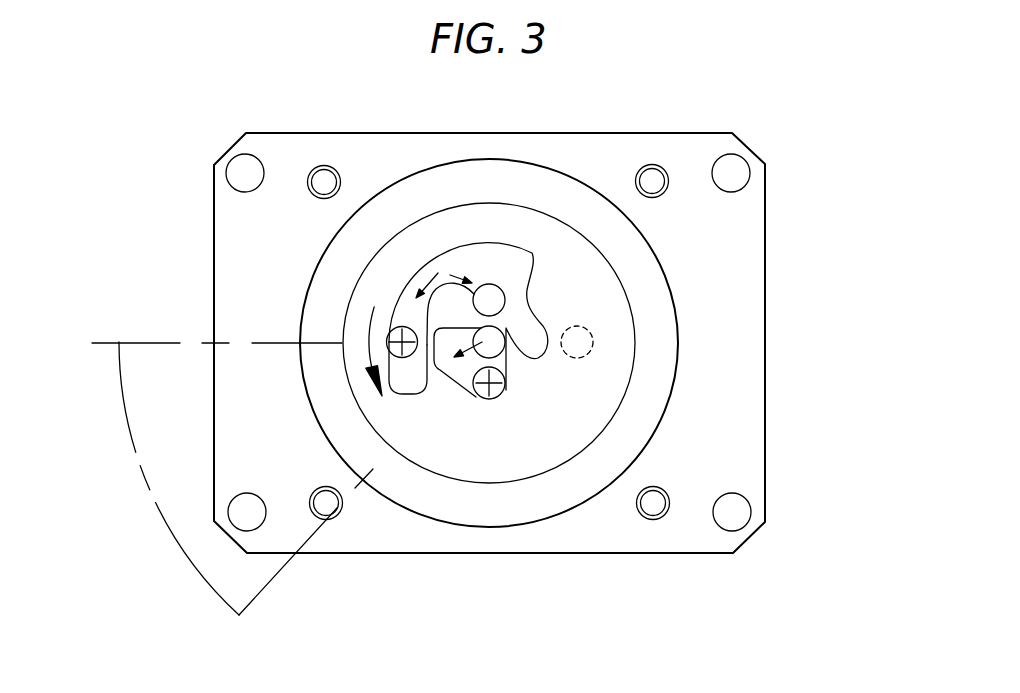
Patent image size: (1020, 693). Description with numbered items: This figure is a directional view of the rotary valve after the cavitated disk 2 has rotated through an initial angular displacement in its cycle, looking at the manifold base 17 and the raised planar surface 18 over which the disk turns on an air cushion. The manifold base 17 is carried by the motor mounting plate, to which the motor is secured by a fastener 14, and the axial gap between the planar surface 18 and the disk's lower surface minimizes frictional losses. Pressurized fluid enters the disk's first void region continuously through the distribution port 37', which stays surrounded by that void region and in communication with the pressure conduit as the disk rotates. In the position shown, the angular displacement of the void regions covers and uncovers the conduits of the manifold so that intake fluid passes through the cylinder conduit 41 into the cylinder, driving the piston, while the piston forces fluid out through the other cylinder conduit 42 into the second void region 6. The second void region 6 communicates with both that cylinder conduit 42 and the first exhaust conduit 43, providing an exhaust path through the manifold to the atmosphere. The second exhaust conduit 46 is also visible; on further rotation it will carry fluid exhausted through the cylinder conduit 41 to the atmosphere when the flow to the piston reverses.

The cavitated disk 2 is at (635, 328).
The second void region 6 is at (502, 257).
The fastener 14 is at (464, 384).
The manifold base 17 is at (767, 425).
The planar surface 18 is at (678, 370).
The distribution port 37' is at (555, 348).
The cylinder conduit 41 is at (493, 398).
The cylinder conduit 42 is at (489, 300).
The first exhaust conduit 43 is at (398, 330).
The second exhaust conduit 46 is at (587, 328).